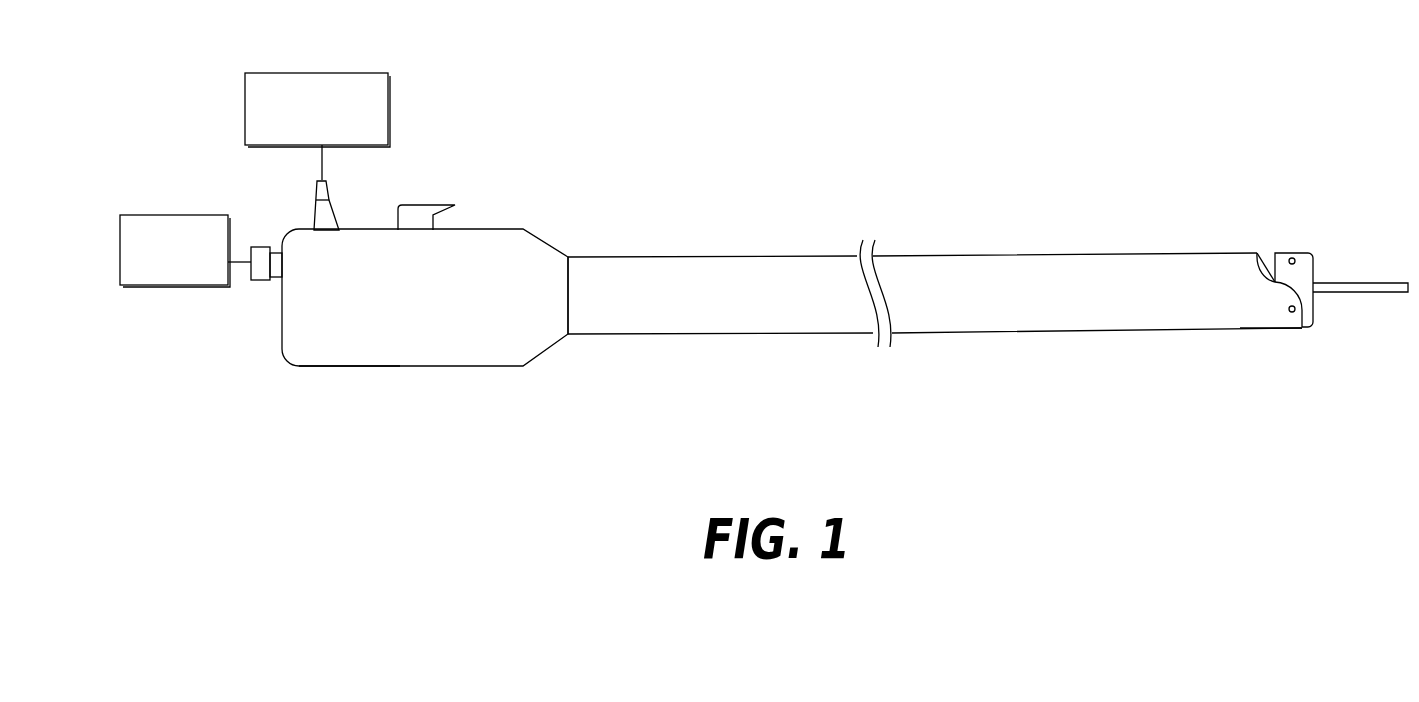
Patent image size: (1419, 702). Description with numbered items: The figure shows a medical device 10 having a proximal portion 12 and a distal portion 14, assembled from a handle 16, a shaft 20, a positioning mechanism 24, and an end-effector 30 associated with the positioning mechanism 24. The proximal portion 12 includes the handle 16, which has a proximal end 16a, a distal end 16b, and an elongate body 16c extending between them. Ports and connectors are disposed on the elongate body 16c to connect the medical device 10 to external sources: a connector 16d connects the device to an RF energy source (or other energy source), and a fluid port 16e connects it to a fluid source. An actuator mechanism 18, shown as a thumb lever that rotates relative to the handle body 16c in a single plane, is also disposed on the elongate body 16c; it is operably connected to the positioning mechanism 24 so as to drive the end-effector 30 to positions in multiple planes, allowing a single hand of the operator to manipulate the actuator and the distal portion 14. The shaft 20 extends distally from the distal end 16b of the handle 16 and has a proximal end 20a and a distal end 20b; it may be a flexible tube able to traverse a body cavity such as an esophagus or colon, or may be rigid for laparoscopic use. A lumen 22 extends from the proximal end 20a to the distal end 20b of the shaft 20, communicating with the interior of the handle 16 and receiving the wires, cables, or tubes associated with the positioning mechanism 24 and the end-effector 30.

The medical device 10 is at (220, 82).
The proximal portion 12 is at (270, 229).
The distal portion 14 is at (1209, 231).
The handle 16 is at (428, 368).
The proximal end 16a is at (297, 368).
The distal end 16b is at (569, 336).
The elongate body 16c is at (343, 357).
The connector 16d is at (322, 209).
The fluid port 16e is at (258, 281).
The actuator mechanism 18 is at (421, 211).
The shaft 20 is at (975, 257).
The proximal end 20a is at (569, 256).
The distal end 20b is at (1298, 329).
The lumen 22 is at (1268, 272).
The positioning mechanism 24 is at (1309, 245).
The end-effector 30 is at (1370, 291).